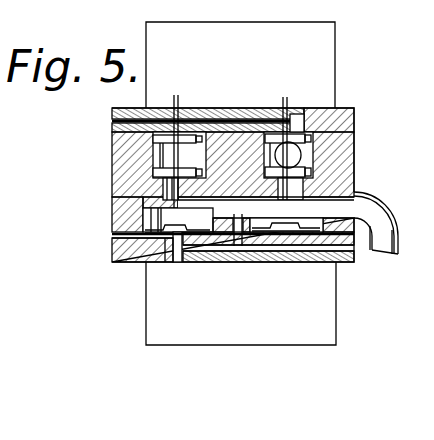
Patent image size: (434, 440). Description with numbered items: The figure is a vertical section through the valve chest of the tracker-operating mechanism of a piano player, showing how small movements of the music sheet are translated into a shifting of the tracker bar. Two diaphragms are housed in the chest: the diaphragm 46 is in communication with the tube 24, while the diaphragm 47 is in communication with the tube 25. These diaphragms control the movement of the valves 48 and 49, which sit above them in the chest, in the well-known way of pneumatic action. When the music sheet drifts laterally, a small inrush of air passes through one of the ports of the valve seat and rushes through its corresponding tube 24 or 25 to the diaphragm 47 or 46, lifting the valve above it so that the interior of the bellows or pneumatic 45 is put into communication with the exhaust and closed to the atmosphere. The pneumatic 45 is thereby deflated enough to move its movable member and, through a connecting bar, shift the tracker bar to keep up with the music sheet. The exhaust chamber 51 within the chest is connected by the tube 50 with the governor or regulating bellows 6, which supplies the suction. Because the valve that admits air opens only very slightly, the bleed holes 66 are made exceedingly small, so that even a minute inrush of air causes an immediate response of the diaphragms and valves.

The governor or regulating bellows 6 is at (173, 96).
The tube 24 is at (346, 251).
The tube 25 is at (222, 246).
The bellows or pneumatic 45 is at (241, 183).
The diaphragm 46 is at (180, 251).
The diaphragm 47 is at (297, 243).
The valve 48 is at (270, 136).
The valve 49 is at (181, 135).
The tube 50 is at (377, 207).
The exhaust chamber 51 is at (314, 211).
The bleed holes 66 is at (166, 239).